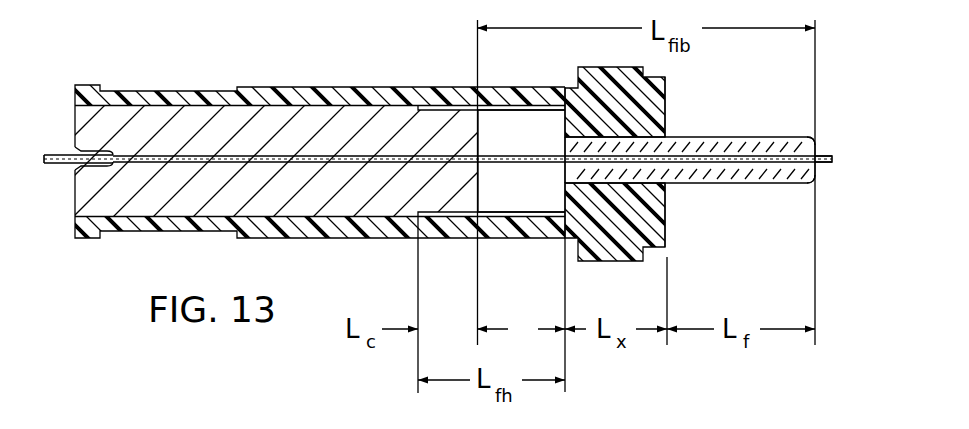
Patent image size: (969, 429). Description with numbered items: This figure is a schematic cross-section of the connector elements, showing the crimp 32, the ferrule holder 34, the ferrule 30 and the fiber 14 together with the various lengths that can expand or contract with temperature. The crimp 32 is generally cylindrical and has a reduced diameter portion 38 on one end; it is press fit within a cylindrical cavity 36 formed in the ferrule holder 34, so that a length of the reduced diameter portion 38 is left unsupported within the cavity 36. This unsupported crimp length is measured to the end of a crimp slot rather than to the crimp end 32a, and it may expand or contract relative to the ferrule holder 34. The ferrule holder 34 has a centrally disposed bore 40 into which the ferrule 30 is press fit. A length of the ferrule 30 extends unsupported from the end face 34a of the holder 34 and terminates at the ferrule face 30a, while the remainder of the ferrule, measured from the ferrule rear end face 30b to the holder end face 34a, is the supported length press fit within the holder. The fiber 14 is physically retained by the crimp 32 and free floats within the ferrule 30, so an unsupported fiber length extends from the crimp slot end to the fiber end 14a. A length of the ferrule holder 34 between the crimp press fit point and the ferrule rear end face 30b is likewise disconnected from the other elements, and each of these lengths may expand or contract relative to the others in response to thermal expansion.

The fiber 14 is at (517, 163).
The fiber end 14a is at (815, 162).
The ferrule 30 is at (732, 138).
The ferrule face 30a is at (815, 140).
The ferrule rear end face 30b is at (564, 141).
The crimp 32 is at (187, 128).
The end of crimp 32a is at (478, 125).
The ferrule holder 34 is at (365, 96).
The end face of holder 34a is at (667, 222).
The cylindrical cavity 36 is at (497, 197).
The reduced diameter portion 38 is at (428, 108).
The bore 40 is at (667, 137).